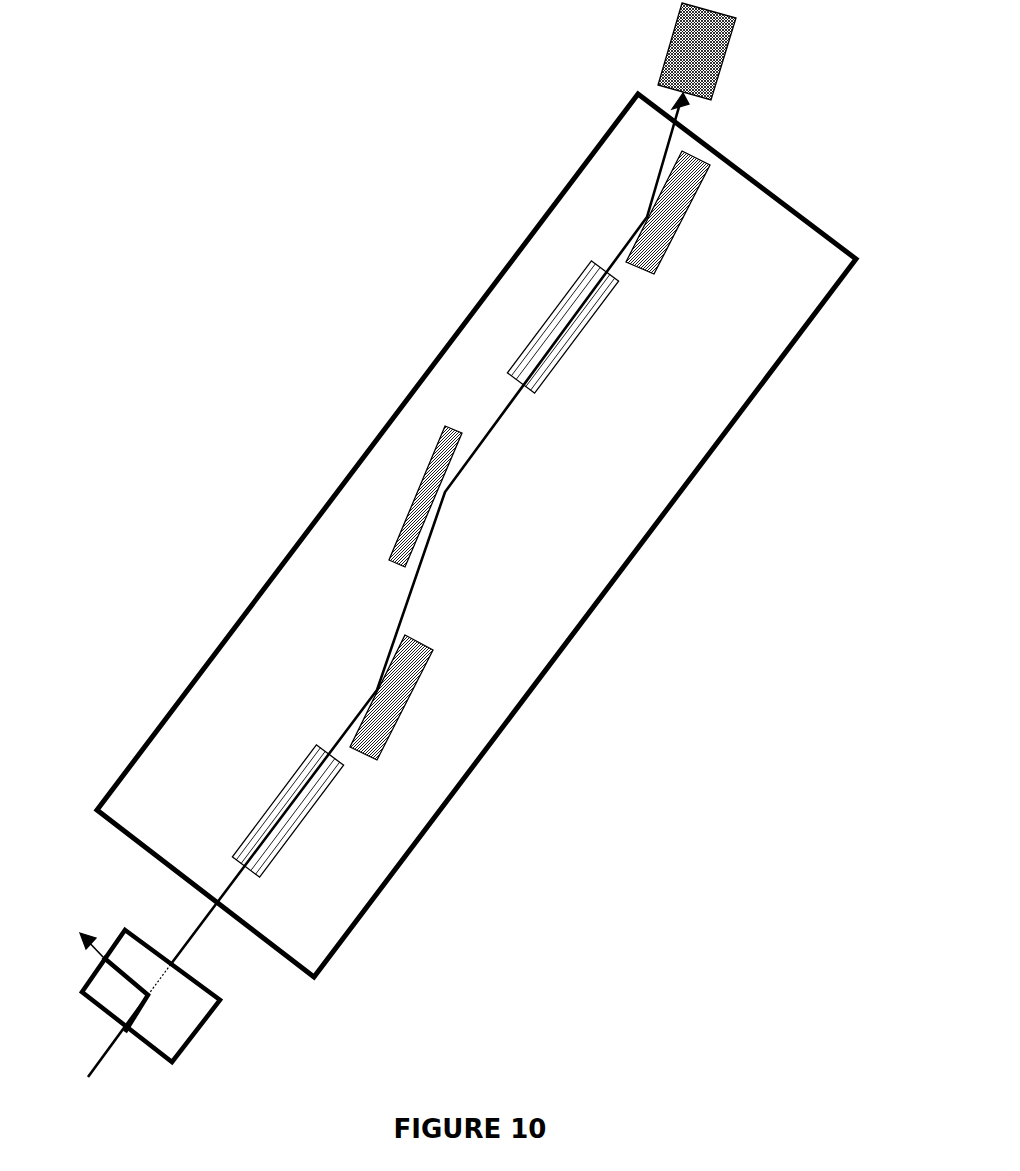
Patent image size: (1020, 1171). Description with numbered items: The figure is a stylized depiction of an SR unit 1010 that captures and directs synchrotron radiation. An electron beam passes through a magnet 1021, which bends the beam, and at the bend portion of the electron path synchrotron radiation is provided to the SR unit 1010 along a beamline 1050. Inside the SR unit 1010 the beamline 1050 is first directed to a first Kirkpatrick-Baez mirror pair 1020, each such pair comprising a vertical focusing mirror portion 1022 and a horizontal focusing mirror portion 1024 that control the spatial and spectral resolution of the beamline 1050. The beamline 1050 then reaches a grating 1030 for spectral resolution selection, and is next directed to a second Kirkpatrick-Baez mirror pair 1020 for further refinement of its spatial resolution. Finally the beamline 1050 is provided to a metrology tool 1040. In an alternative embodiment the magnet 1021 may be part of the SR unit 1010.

The SR unit 1010 is at (585, 625).
The Kirkpatrick-Baez mirror pair 1020 is at (451, 508).
The magnet 1021 is at (200, 1025).
The vertical focusing mirror portion 1022 is at (275, 793).
The horizontal focusing mirror portion 1024 is at (420, 682).
The grating 1030 is at (400, 515).
The metrology tool 1040 is at (660, 60).
The beamline 1050 is at (235, 895).